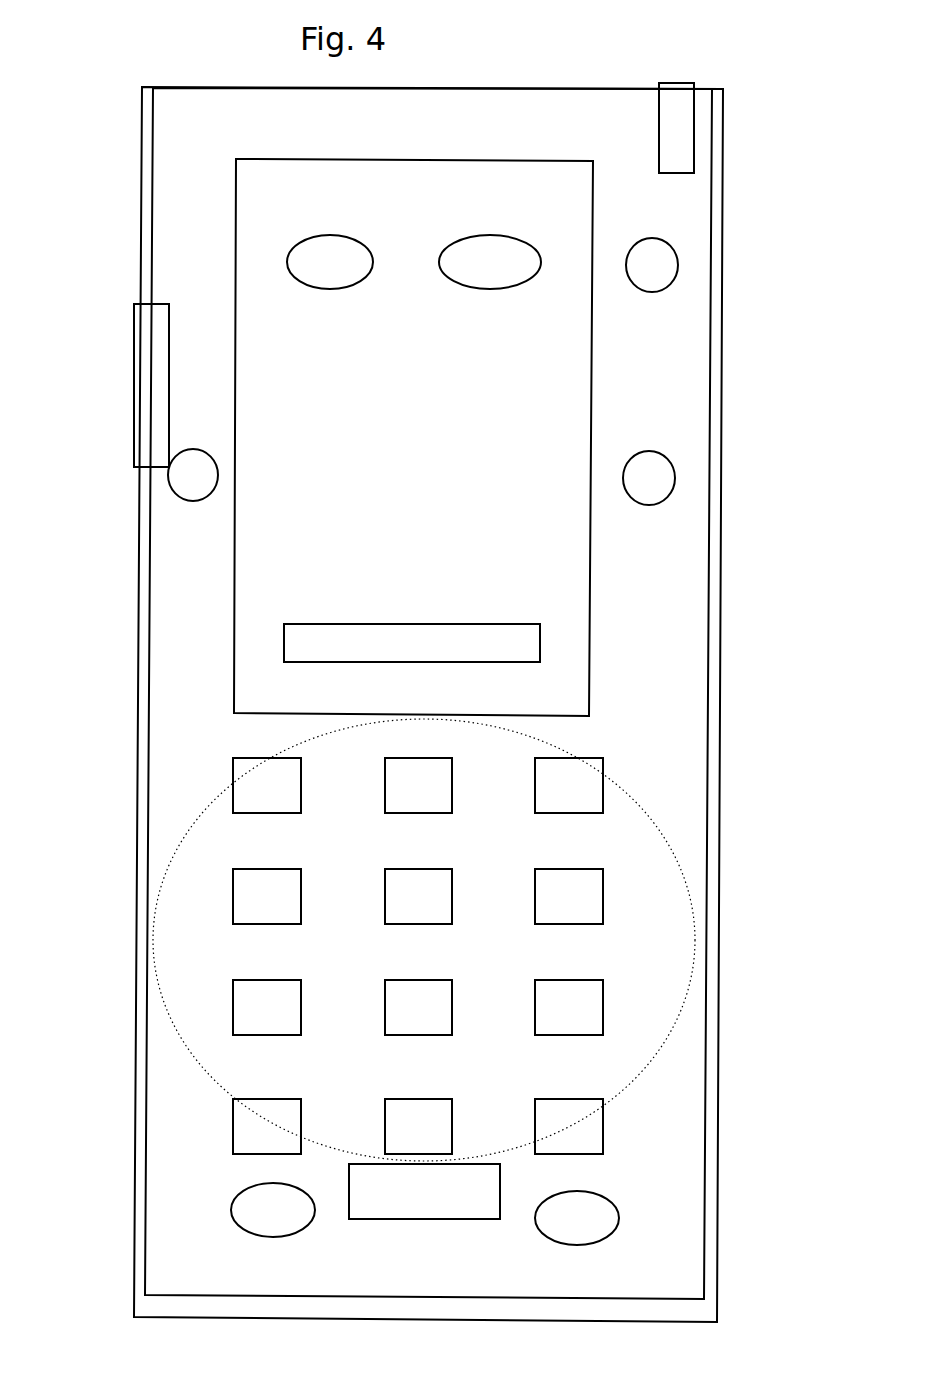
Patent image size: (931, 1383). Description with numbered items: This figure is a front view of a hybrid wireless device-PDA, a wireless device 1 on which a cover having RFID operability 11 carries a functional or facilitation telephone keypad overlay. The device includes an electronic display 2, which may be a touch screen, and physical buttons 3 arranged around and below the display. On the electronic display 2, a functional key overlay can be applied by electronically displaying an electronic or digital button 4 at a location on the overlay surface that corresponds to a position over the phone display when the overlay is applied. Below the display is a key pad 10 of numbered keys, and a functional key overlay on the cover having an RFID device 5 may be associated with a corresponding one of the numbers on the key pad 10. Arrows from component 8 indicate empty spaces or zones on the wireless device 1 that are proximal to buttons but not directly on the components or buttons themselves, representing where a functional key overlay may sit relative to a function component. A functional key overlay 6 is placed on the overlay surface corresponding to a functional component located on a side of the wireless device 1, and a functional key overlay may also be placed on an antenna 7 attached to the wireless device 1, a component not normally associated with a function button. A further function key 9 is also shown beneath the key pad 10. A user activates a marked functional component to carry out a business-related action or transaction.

The wireless device 1 is at (428, 668).
The electronic display 2 is at (418, 143).
The physical buttons 3 is at (619, 298).
The electronic or digital button 4 is at (364, 292).
The functional key overlay on cover having RFID device 5 is at (583, 827).
The functional key overlay 6 is at (117, 358).
The antenna 7 is at (687, 108).
The component indicating empty spaces or zones 8 is at (689, 781).
The function key 9 is at (329, 1172).
The key pad 10 is at (152, 921).
The cover having RFID operability 11 is at (143, 247).